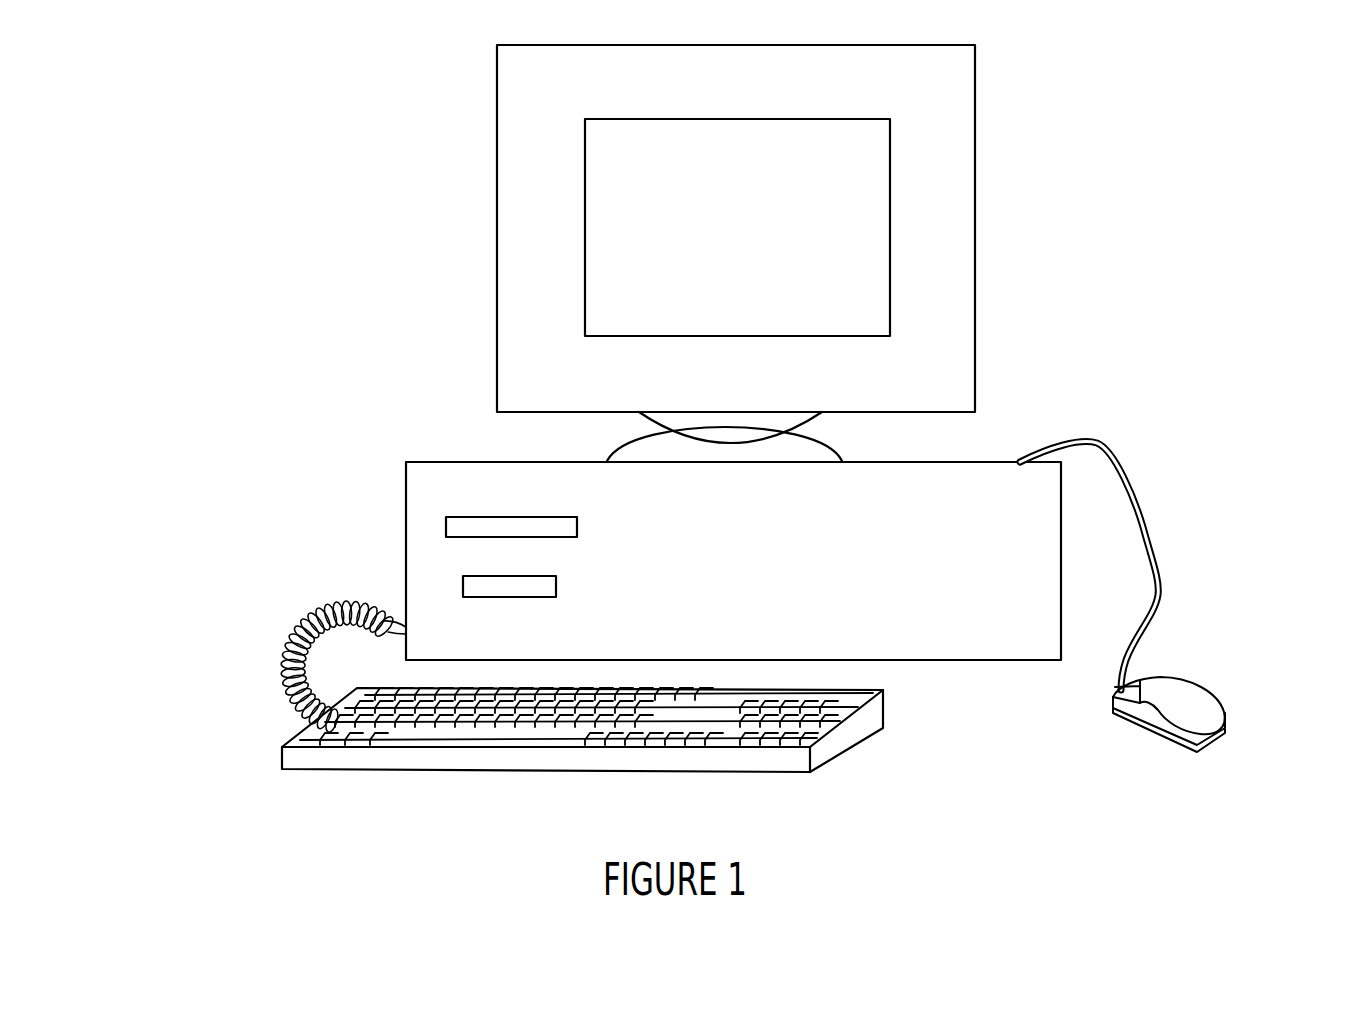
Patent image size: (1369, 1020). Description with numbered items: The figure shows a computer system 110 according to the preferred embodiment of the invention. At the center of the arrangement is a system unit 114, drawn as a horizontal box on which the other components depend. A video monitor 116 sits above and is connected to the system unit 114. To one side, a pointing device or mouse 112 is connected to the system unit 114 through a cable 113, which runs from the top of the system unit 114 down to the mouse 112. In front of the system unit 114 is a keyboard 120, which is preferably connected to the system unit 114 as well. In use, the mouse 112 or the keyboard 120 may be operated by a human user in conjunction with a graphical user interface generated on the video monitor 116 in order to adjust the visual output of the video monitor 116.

The computer system 110 is at (288, 372).
The mouse 112 is at (1212, 697).
The cable 113 is at (1133, 483).
The system unit 114 is at (406, 550).
The video monitor 116 is at (497, 277).
The keyboard 120 is at (282, 753).